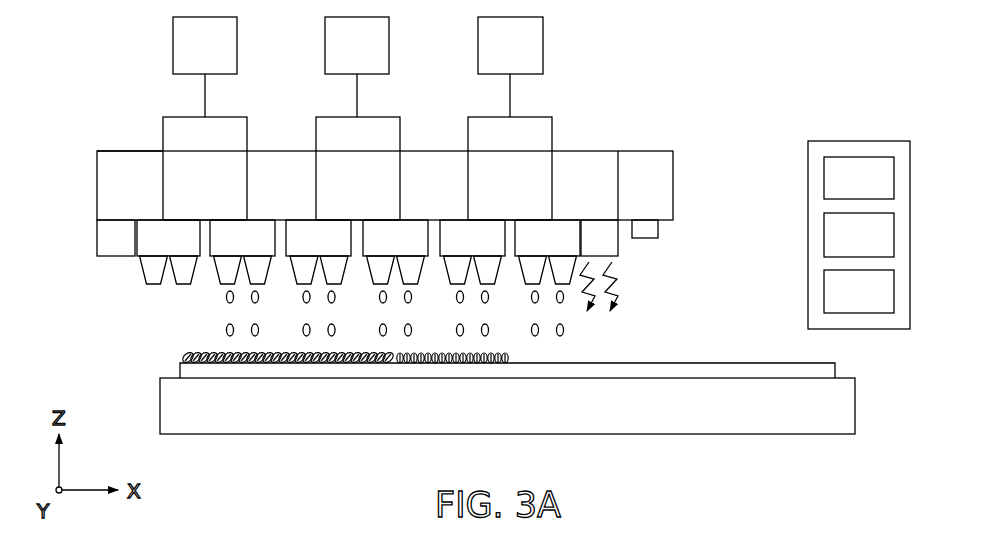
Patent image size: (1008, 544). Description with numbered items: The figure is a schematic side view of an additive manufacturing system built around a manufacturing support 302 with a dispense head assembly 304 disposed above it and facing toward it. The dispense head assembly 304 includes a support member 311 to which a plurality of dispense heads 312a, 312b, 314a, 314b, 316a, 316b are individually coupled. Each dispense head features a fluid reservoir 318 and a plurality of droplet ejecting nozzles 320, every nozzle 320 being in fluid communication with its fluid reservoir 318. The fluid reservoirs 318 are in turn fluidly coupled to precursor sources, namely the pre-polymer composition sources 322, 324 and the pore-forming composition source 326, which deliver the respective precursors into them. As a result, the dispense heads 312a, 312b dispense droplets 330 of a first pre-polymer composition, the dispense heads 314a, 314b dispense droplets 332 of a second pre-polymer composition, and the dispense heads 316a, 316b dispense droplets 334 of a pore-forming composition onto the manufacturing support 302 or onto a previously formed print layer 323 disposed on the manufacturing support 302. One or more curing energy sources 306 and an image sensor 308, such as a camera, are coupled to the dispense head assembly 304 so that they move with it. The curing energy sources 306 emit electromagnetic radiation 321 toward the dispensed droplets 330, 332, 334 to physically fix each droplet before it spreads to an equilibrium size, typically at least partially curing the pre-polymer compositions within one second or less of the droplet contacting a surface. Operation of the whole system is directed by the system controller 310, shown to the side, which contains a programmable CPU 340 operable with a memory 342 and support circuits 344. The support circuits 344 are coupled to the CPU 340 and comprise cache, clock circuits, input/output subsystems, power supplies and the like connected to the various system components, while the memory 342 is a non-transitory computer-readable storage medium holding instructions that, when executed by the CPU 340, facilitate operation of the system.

The manufacturing support 302 is at (489, 419).
The dispense head assembly 304 is at (584, 124).
The curing energy source 306 is at (97, 243).
The image sensor 308 is at (673, 183).
The system controller 310 is at (876, 141).
The support member 311 is at (107, 151).
The dispense head 312a is at (136, 262).
The dispense head 312b is at (214, 274).
The dispense head 314a is at (334, 219).
The dispense head 314b is at (411, 219).
The dispense head 316a is at (494, 232).
The dispense head 316b is at (567, 232).
The fluid reservoir 318 is at (150, 247).
The droplet ejecting nozzle 320 is at (266, 268).
The electromagnetic radiation 321 is at (622, 290).
The pre-polymer composition source 322 is at (186, 57).
The previously formed print layer 323 is at (738, 362).
The pre-polymer composition source 324 is at (338, 57).
The pore-forming composition source 326 is at (491, 57).
The droplets 330 is at (251, 333).
The droplets 332 is at (380, 294).
The droplets 334 is at (533, 294).
The CPU 340 is at (840, 189).
The memory 342 is at (840, 246).
The support circuits 344 is at (840, 302).